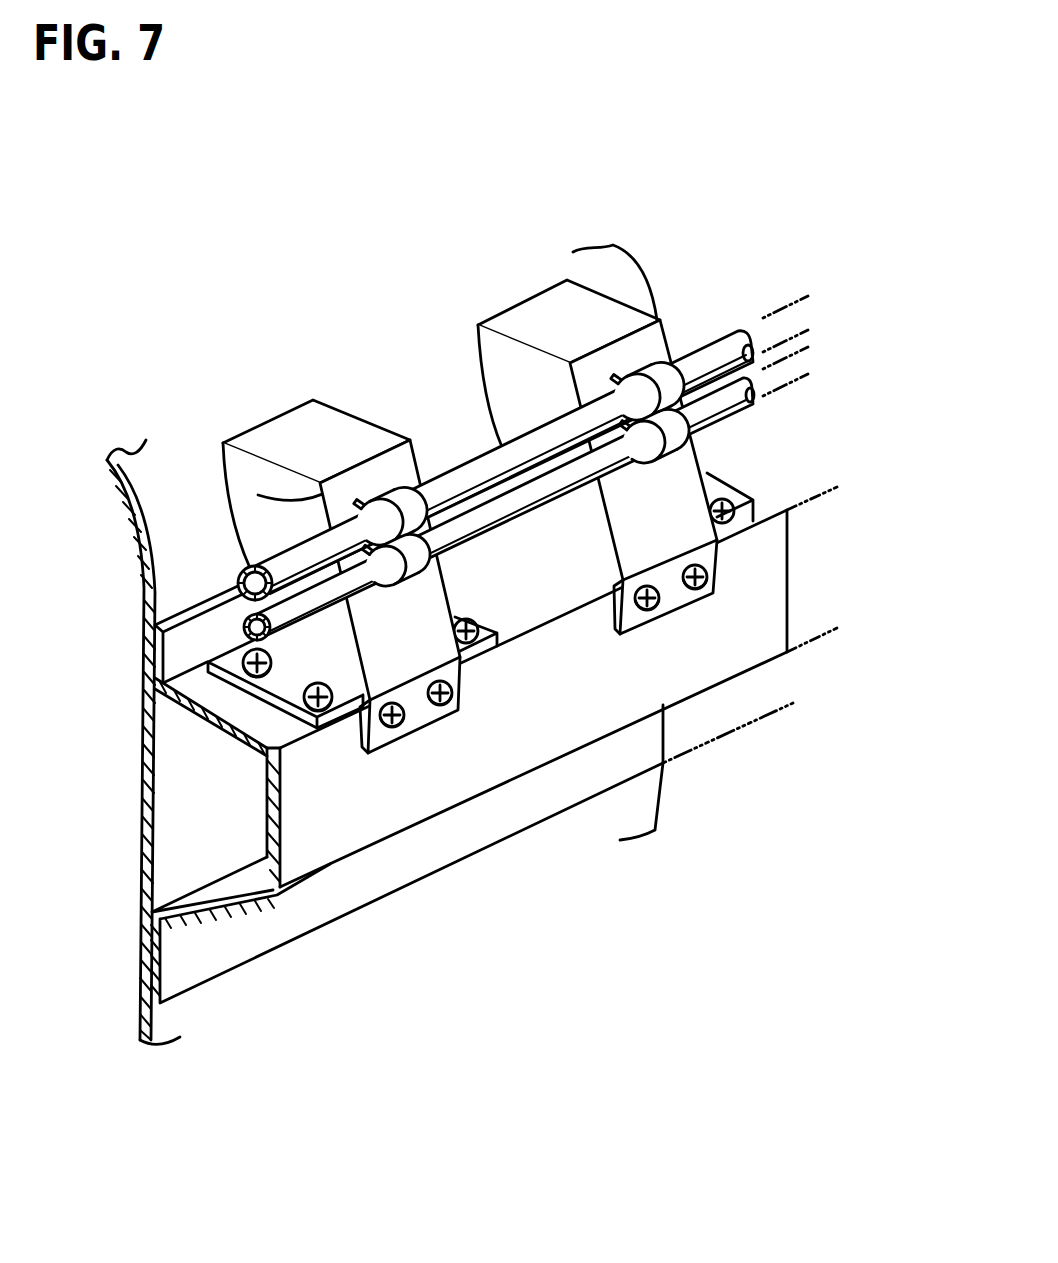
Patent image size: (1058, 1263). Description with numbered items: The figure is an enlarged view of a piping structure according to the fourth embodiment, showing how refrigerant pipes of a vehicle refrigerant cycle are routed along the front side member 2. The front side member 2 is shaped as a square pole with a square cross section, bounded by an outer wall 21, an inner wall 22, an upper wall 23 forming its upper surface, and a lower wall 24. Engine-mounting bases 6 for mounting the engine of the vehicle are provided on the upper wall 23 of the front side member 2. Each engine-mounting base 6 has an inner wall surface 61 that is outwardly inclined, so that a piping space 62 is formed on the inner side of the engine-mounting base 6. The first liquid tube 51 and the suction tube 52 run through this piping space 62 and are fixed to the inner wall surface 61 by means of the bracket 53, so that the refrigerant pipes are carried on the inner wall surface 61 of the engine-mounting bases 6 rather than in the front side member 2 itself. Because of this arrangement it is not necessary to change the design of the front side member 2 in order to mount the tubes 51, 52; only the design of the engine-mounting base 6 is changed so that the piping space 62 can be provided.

The front side member 2 is at (453, 765).
The engine-mounting base 6 is at (494, 576).
The outer wall 21 is at (168, 845).
The inner wall 22 is at (312, 860).
The upper wall 23 is at (215, 700).
The lower wall 24 is at (217, 906).
The first liquid tube 51 is at (484, 510).
The suction tube 52 is at (443, 476).
The bracket 53 is at (397, 495).
The inner wall surface 61 is at (668, 480).
The piping space 62 is at (258, 495).